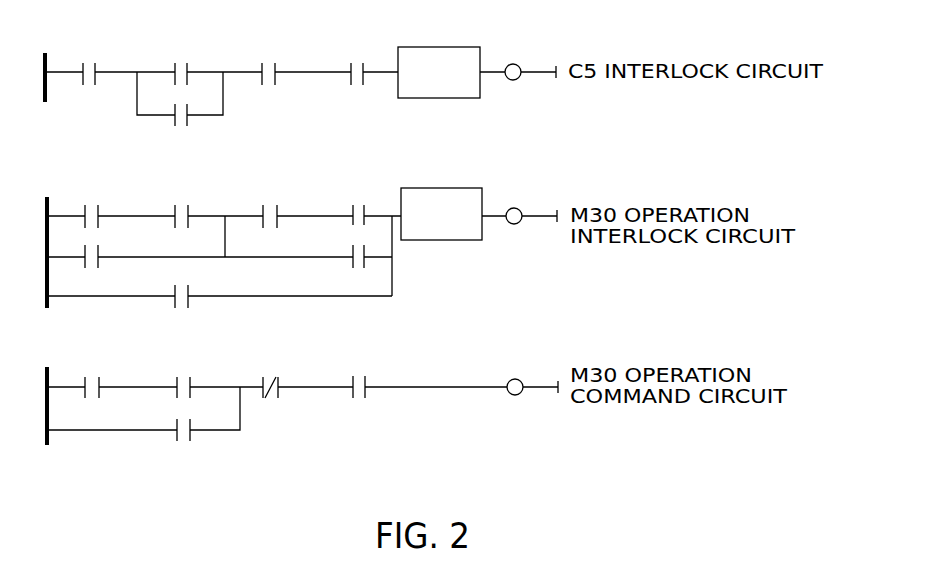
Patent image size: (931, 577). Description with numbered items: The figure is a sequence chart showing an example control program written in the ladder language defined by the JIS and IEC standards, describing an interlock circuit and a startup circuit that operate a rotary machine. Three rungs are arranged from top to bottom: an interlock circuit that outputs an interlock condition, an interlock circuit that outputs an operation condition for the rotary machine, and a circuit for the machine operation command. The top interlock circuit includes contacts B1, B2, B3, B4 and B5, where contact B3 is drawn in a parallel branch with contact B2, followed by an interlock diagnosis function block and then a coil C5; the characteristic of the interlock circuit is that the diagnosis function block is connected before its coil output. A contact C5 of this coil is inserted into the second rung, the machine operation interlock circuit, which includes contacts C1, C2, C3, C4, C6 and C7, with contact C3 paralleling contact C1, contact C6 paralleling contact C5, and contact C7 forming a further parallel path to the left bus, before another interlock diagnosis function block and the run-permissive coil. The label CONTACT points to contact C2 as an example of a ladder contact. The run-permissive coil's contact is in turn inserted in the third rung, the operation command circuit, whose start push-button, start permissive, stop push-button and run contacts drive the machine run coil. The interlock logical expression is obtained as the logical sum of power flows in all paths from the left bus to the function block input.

The contact B1 is at (89, 63).
The contact B2 is at (181, 63).
The contact B3 is at (180, 99).
The contact B4 is at (268, 63).
The contact B5 is at (357, 63).
The coil C5 / contact C5 is at (370, 178).
The contact CONTACT is at (197, 208).
The contact C1 is at (91, 206).
The contact C2 is at (181, 206).
The contact C3 is at (91, 248).
The contact C4 is at (270, 206).
The contact C6 is at (358, 248).
The contact C7 is at (181, 287).